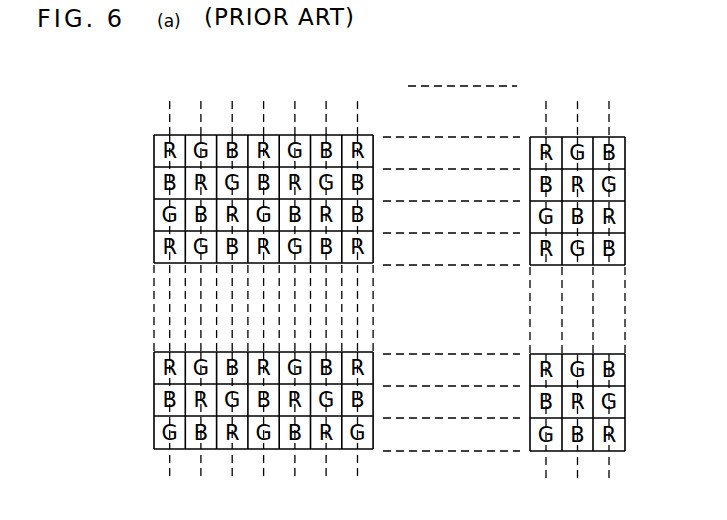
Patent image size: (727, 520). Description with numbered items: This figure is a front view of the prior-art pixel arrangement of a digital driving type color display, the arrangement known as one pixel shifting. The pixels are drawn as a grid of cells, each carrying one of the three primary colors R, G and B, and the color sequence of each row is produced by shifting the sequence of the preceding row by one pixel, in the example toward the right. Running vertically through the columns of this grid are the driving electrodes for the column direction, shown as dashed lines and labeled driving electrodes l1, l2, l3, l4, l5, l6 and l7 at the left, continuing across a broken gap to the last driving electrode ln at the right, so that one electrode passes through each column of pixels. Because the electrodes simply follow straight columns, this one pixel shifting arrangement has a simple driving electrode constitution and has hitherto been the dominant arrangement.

The driving electrode l1 is at (171, 86).
The driving electrode l2 is at (202, 86).
The driving electrode l3 is at (233, 86).
The driving electrode l4 is at (265, 86).
The driving electrode l5 is at (296, 86).
The driving electrode l6 is at (327, 86).
The driving electrode l7 is at (359, 86).
The driving electrode ln is at (615, 86).